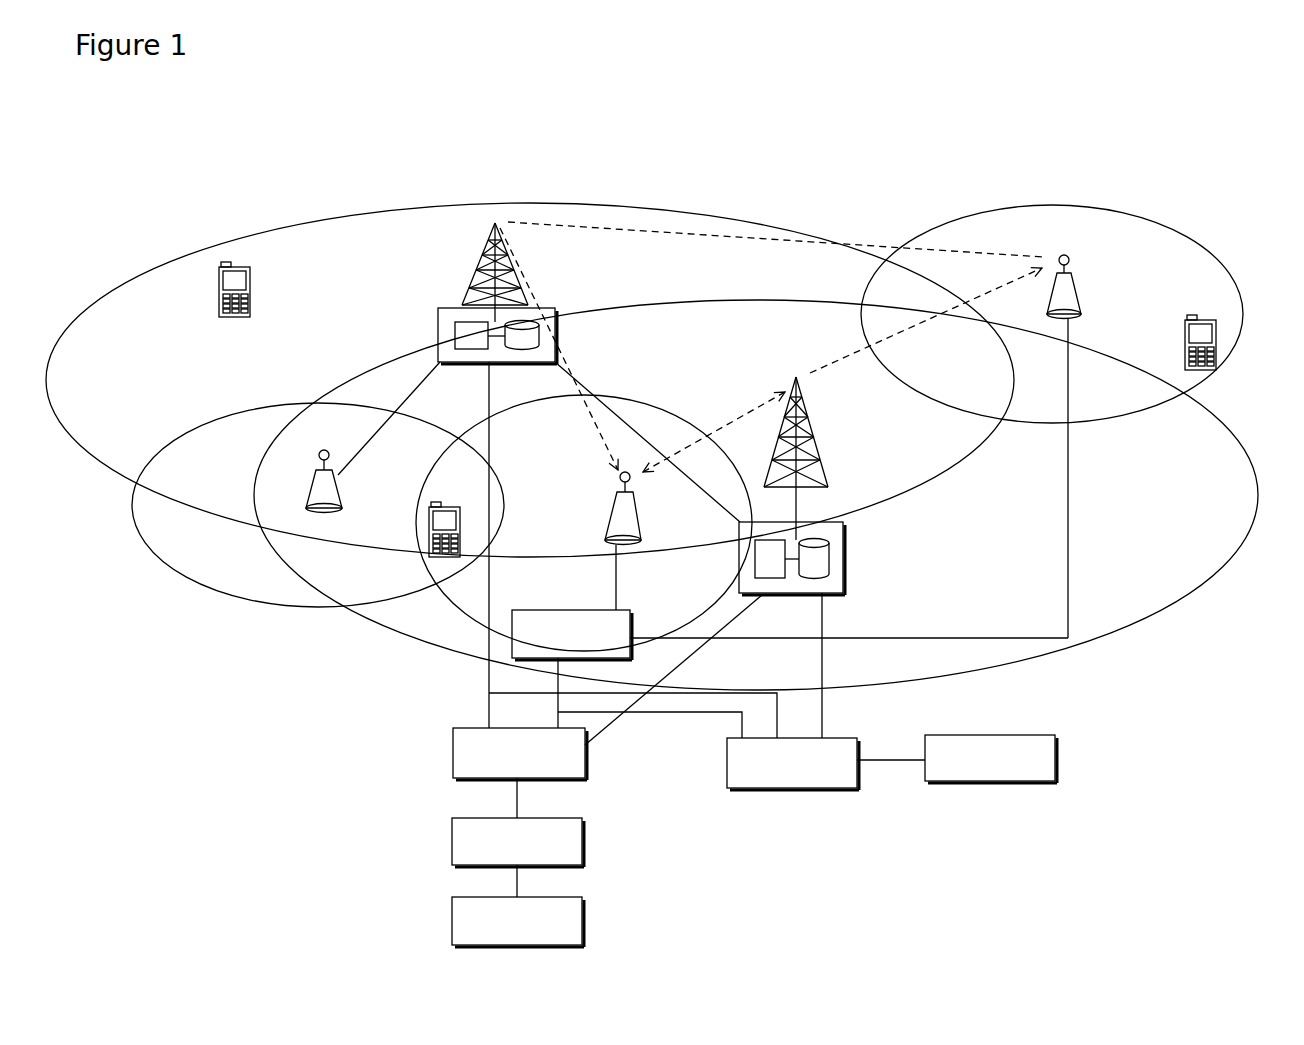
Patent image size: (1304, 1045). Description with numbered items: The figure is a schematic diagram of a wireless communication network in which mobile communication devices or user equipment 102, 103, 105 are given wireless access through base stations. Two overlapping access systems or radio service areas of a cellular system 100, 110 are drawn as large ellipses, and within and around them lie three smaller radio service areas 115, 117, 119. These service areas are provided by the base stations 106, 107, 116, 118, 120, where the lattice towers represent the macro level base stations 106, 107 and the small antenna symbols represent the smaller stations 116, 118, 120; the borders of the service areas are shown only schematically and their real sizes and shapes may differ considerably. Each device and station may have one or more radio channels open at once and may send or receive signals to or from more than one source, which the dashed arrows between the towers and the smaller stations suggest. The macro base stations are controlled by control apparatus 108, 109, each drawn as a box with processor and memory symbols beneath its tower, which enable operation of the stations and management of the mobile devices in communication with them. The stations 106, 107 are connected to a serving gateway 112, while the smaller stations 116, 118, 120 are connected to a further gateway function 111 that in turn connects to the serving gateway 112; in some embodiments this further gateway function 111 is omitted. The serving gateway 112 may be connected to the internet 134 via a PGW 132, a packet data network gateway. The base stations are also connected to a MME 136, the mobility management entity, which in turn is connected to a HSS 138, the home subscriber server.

The radio service area of cellular system 100 is at (142, 252).
The user equipment 102 is at (219, 307).
The user equipment 103 is at (429, 540).
The user equipment 105 is at (1216, 356).
The macro level base station 106 is at (490, 281).
The macro level base station 107 is at (816, 448).
The control apparatus 108 is at (438, 325).
The control apparatus 109 is at (843, 590).
The radio service area of cellular system 110 is at (1135, 632).
The further gateway function 111 is at (528, 622).
The serving gateway 112 is at (455, 730).
The smaller radio service area 115 is at (1212, 230).
The smaller base station 116 is at (952, 222).
The smaller radio service area 117 is at (684, 384).
The smaller base station 118 is at (627, 522).
The smaller radio service area 119 is at (218, 590).
The smaller base station 120 is at (322, 488).
The PGW 132 is at (584, 843).
The internet 134 is at (584, 920).
The MME 136 is at (836, 793).
The HSS 138 is at (1057, 760).